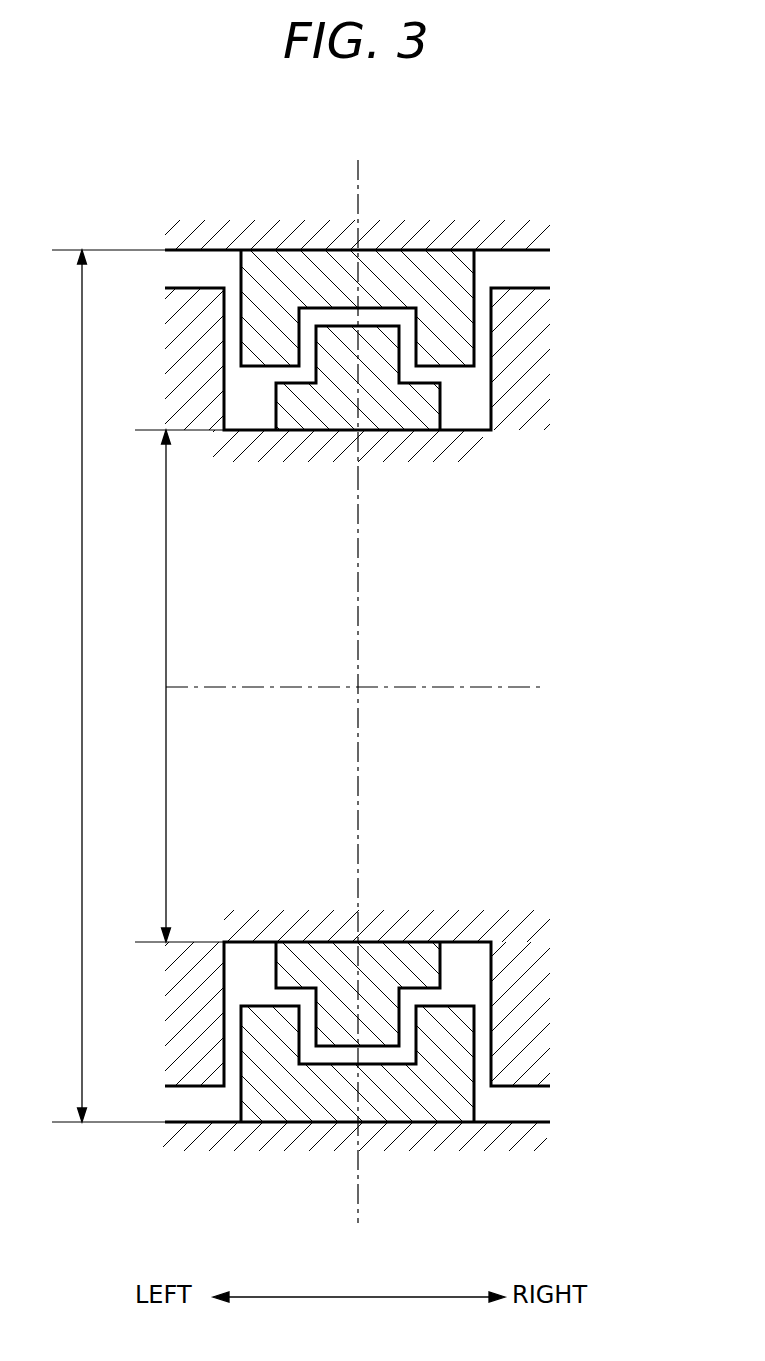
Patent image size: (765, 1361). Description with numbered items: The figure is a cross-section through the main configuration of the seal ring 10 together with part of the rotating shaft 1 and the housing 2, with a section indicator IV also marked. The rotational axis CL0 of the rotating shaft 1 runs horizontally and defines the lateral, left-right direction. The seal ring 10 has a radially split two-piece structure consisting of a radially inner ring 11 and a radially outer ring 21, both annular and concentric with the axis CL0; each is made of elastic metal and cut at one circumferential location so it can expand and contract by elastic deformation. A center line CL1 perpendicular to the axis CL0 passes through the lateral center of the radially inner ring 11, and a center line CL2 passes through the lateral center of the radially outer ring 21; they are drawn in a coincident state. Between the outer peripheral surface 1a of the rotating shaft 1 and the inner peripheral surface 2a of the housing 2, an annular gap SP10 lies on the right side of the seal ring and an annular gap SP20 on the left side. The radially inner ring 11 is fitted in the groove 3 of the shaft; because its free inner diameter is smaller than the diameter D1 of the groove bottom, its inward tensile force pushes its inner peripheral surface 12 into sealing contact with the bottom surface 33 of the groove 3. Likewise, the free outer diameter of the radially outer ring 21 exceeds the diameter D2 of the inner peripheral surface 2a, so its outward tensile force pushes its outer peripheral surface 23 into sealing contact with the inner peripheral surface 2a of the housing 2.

The seal ring 10 is at (556, 216).
The section view indicator IV is at (579, 274).
The radially outer ring 21 is at (474, 332).
The radially inner ring 11 is at (440, 410).
The annular gap SP20 is at (178, 272).
The annular gap SP10 is at (507, 272).
The center line CL2 is at (355, 195).
The center line CL1 is at (360, 593).
The axis CL0 is at (377, 689).
The diameter of the inner peripheral surface of the housing D2 is at (102, 686).
The diameter of the bottom surface of the groove D1 is at (173, 686).
The rotating shaft 1 is at (532, 1048).
The housing 2 is at (532, 1159).
The inner peripheral surface 2a is at (208, 1122).
The outer peripheral surface 23 is at (281, 1122).
The inner peripheral surface 12 is at (312, 942).
The groove 3 is at (458, 953).
The bottom surface 33 is at (397, 944).
The outer peripheral surface 1a is at (502, 1086).